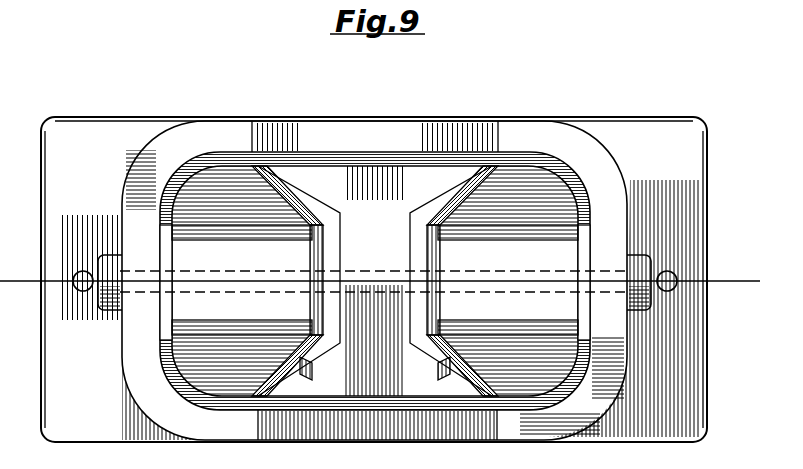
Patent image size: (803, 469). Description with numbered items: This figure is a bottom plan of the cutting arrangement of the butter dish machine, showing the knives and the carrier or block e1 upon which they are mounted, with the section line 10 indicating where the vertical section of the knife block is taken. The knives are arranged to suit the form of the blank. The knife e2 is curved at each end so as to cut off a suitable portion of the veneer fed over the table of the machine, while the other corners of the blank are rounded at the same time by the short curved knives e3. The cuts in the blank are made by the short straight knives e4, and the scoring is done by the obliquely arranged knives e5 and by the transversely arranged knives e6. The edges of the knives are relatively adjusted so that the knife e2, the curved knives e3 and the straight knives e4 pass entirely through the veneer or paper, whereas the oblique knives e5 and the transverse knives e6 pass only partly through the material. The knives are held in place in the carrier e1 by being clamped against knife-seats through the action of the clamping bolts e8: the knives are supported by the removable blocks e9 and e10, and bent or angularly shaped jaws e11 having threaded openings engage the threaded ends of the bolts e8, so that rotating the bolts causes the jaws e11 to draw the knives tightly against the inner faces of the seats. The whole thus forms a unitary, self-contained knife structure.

The carrier or block e1 is at (693, 181).
The knife e2 is at (438, 157).
The short curved knives e3 is at (193, 400).
The short straight knives e4 is at (197, 238).
The obliquely arranged knives e5 is at (277, 172).
The transversely arranged knives e6 is at (322, 252).
The clamping bolts e8 is at (97, 308).
The removable block e9 is at (228, 178).
The removable block e10 is at (375, 290).
The bent or angularly shaped jaws e11 is at (325, 372).
The section line 10- 10 is at (30, 262).